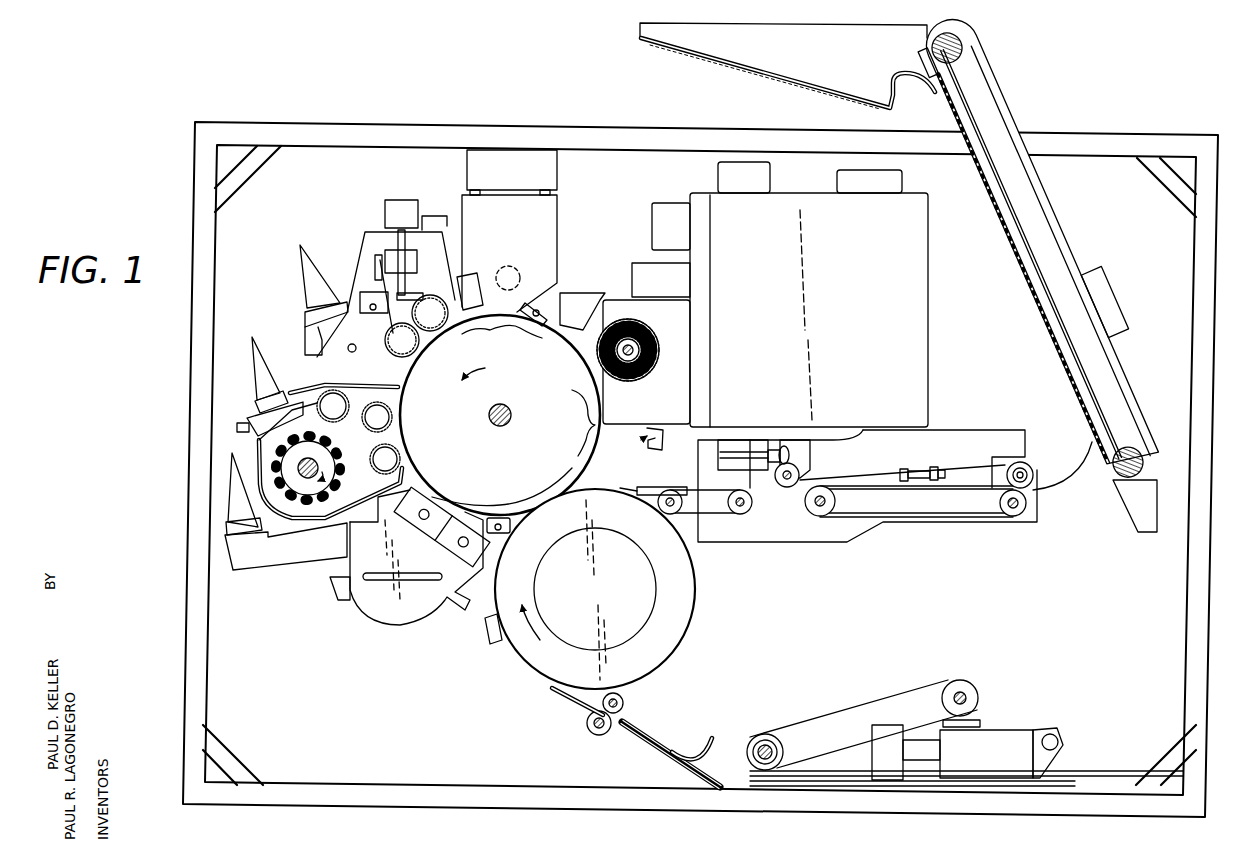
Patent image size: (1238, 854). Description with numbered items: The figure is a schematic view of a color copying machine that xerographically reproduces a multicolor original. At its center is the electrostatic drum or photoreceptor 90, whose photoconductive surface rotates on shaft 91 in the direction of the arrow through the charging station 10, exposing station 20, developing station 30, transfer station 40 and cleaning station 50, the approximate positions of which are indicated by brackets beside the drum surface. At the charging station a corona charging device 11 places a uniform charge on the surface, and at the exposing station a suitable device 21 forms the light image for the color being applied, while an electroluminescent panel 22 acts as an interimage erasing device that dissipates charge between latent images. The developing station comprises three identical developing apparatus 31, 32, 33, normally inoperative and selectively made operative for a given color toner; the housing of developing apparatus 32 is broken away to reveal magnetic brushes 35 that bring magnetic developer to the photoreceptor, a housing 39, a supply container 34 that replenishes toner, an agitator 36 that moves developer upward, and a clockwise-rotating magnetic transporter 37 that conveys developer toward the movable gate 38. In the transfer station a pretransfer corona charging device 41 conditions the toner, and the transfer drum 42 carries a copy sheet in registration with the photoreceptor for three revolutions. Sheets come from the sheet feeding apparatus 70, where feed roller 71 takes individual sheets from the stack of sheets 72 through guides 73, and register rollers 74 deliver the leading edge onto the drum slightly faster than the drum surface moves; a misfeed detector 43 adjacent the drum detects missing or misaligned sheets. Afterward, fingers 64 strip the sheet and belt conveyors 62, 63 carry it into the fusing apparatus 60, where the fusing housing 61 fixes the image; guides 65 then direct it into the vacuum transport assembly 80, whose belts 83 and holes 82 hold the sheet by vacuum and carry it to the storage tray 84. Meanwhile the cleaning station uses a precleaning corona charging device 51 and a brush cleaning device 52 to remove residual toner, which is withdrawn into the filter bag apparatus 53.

The charging station 10 is at (531, 366).
The corona charging device 11 is at (583, 294).
The exposing station 20 is at (499, 366).
The light image forming device 21 is at (560, 206).
The electroluminescent panel 22 is at (468, 274).
The developing station 30 is at (451, 423).
The developing apparatus 31 is at (355, 245).
The developing apparatus 32 is at (244, 382).
The developing apparatus 33 is at (356, 605).
The supply container 34 is at (301, 290).
The magnetic brushes 35 is at (382, 474).
The agitator 36 is at (262, 460).
The magnetic transporter 37 is at (330, 384).
The movable gate 38 is at (352, 353).
The housing 39 is at (268, 536).
The transfer station 40 is at (529, 493).
The pretransfer corona charging device 41 is at (512, 523).
The transfer drum 42 is at (698, 600).
The misfeed detector 43 is at (482, 630).
The cleaning station 50 is at (560, 405).
The precleaning corona charging device 51 is at (662, 436).
The brush cleaning device 52 is at (623, 303).
The filter bag apparatus 53 is at (930, 291).
The fusing apparatus 60 is at (941, 420).
The fusing housing 61 is at (985, 440).
The belt conveyor 62 is at (905, 522).
The belt conveyor 63 is at (727, 510).
The fingers 64 is at (638, 488).
The guides 65 is at (1040, 490).
The sheet feeding apparatus 70 is at (990, 714).
The feed roller 71 is at (752, 734).
The stack of sheets 72 is at (822, 773).
The guides 73 is at (627, 742).
The register rollers 74 is at (622, 706).
The vacuum transport assembly 80 is at (1068, 251).
The holes 82 is at (1012, 217).
The belts 83 is at (992, 197).
The storage tray 84 is at (716, 66).
The photoreceptor 90 is at (590, 462).
The shaft 91 is at (506, 425).